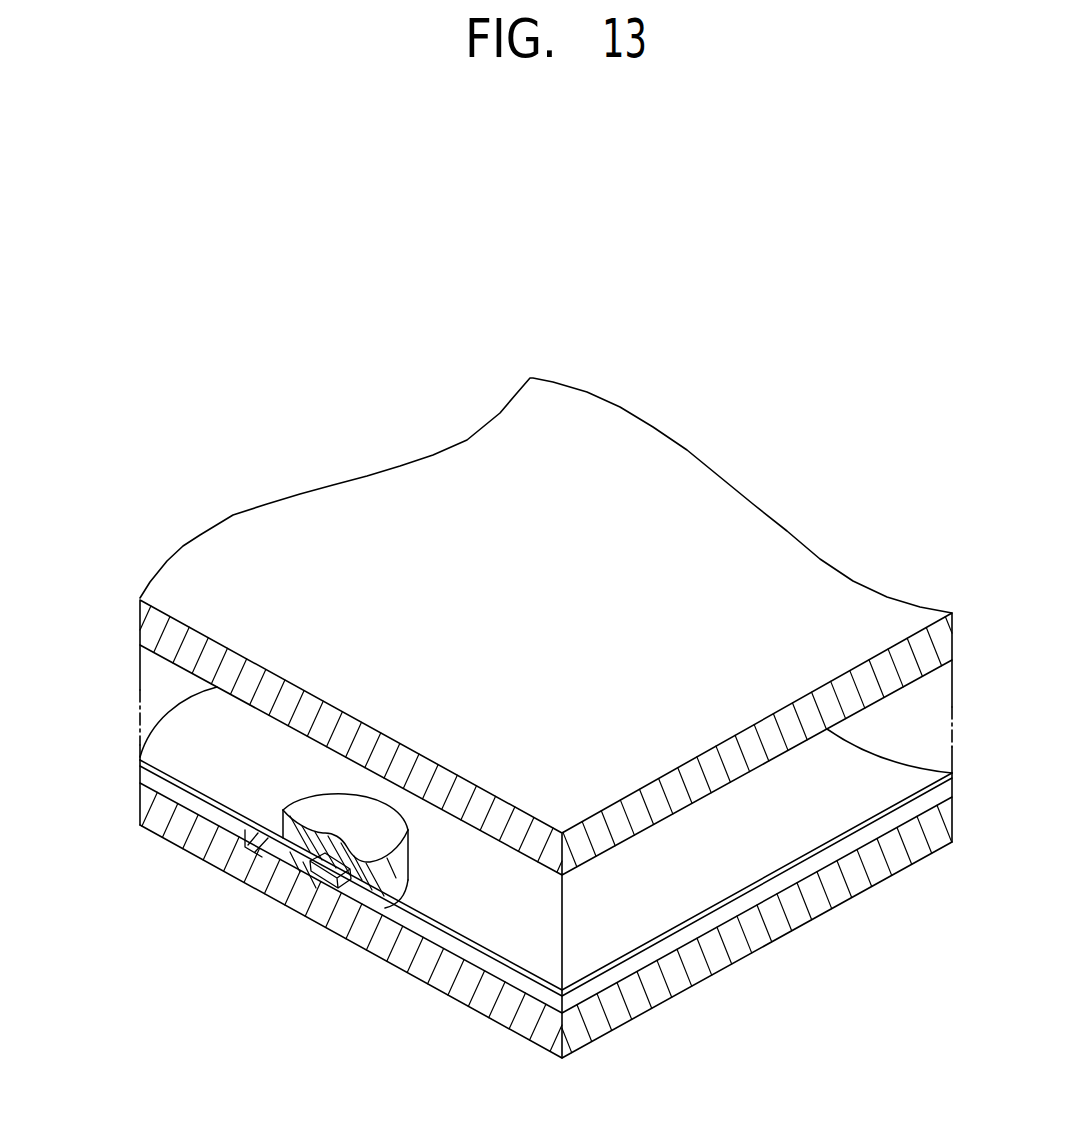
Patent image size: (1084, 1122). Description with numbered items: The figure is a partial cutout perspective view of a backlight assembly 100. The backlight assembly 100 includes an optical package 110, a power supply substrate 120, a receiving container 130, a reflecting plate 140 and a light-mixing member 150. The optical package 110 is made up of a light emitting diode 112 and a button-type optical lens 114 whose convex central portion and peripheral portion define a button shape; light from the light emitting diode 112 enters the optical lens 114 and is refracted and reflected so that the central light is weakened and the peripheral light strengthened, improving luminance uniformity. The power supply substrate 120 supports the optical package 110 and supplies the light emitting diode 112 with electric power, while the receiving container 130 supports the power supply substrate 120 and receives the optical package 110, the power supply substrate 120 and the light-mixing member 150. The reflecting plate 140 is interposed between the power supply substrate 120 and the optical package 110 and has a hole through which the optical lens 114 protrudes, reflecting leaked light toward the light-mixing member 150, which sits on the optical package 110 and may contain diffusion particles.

The backlight assembly 100 is at (548, 319).
The optical package 110 is at (308, 1022).
The light emitting diode (LED) 112 is at (272, 895).
The optical lens 114 is at (320, 925).
The power supply substrate 120 is at (430, 922).
The receiving container 130 is at (667, 972).
The reflecting plate 140 is at (260, 805).
The light-mixing member 150 is at (806, 578).